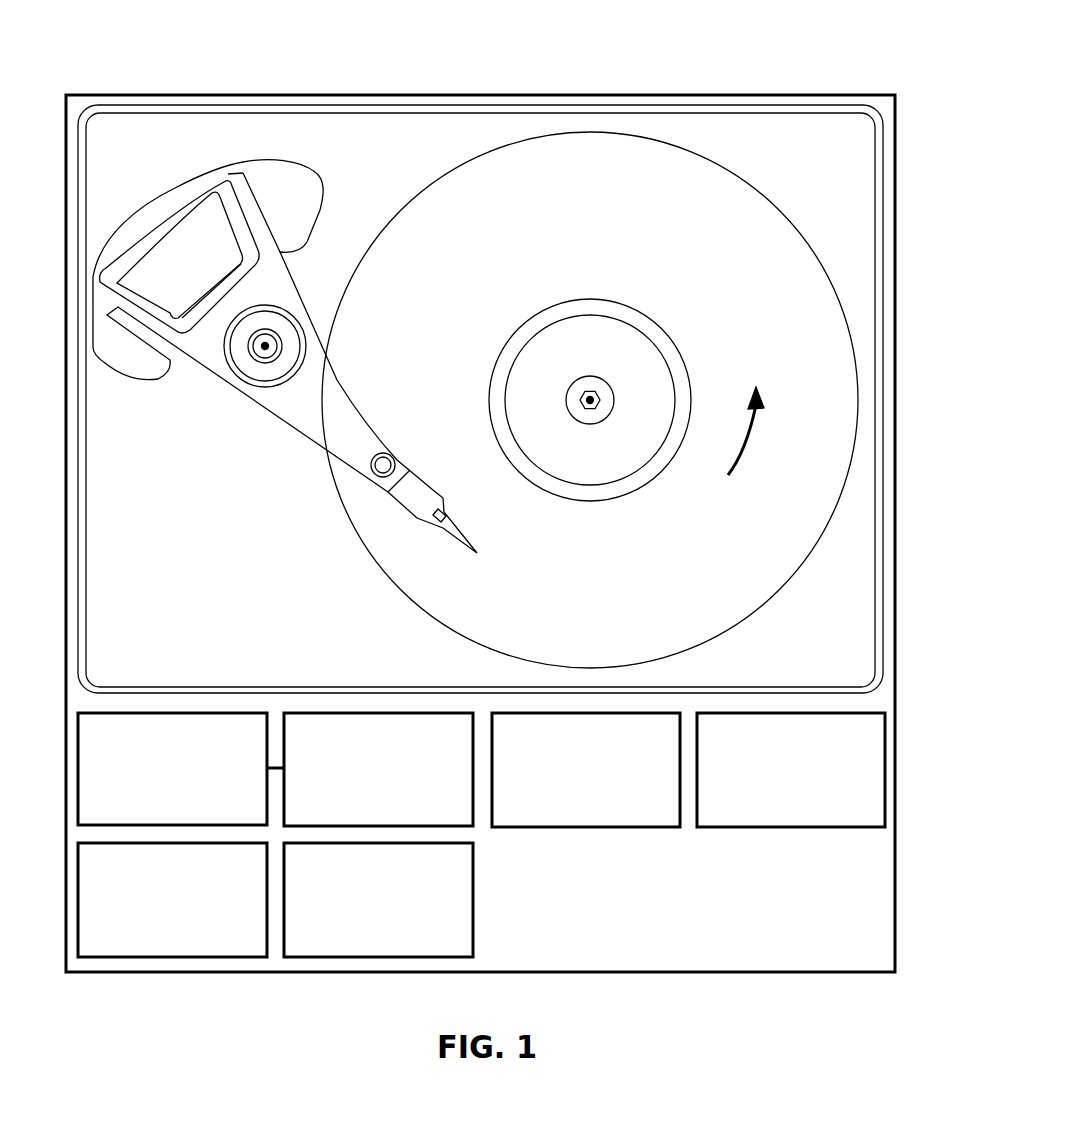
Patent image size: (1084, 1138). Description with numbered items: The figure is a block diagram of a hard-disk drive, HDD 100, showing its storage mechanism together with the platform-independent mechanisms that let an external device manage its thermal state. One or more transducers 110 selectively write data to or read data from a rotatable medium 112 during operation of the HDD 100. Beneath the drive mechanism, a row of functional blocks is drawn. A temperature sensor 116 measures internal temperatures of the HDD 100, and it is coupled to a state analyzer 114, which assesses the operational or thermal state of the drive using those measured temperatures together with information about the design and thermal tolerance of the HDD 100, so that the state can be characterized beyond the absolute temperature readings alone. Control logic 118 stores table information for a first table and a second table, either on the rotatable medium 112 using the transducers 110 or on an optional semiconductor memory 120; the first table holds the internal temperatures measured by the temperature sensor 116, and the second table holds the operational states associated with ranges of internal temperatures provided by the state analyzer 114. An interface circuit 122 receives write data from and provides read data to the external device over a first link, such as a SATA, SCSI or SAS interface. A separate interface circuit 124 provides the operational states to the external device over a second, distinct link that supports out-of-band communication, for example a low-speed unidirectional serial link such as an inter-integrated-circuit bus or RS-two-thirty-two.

The HDD 100 is at (828, 94).
The transducers 110 is at (478, 554).
The rotatable medium 112 is at (536, 180).
The state analyzer 114 is at (360, 804).
The temperature sensor 116 is at (154, 804).
The control logic 118 is at (568, 804).
The semiconductor memory 120 is at (773, 818).
The interface circuit 122 is at (154, 936).
The interface circuit 124 is at (360, 936).